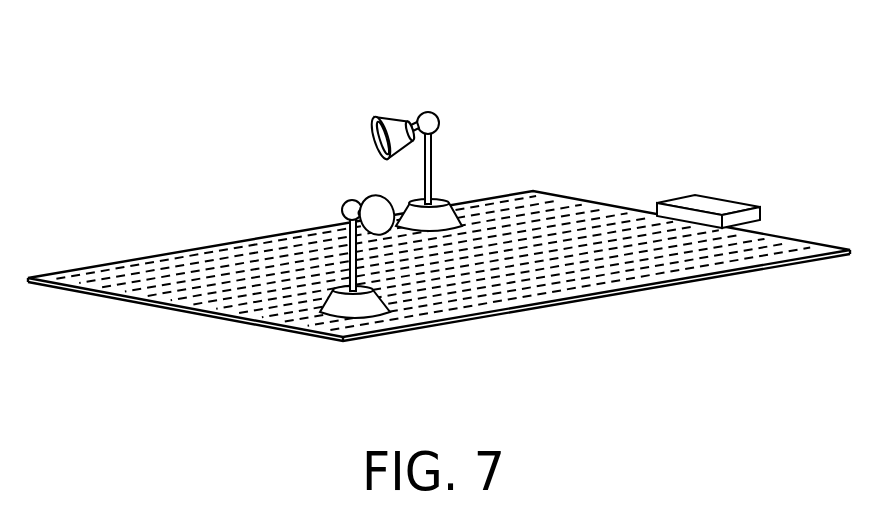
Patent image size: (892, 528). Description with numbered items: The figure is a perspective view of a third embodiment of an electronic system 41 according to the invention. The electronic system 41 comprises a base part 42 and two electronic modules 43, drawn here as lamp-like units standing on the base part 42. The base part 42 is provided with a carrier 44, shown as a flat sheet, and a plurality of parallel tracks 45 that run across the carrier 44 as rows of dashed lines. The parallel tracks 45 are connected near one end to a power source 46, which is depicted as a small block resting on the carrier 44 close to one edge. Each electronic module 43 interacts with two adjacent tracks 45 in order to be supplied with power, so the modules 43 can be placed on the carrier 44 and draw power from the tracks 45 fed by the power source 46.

The electronic system 41 is at (633, 92).
The base part 42 is at (439, 294).
The electronic module 43 is at (336, 196).
The carrier 44 is at (424, 328).
The parallel tracks 45 is at (268, 316).
The power source 46 is at (714, 205).